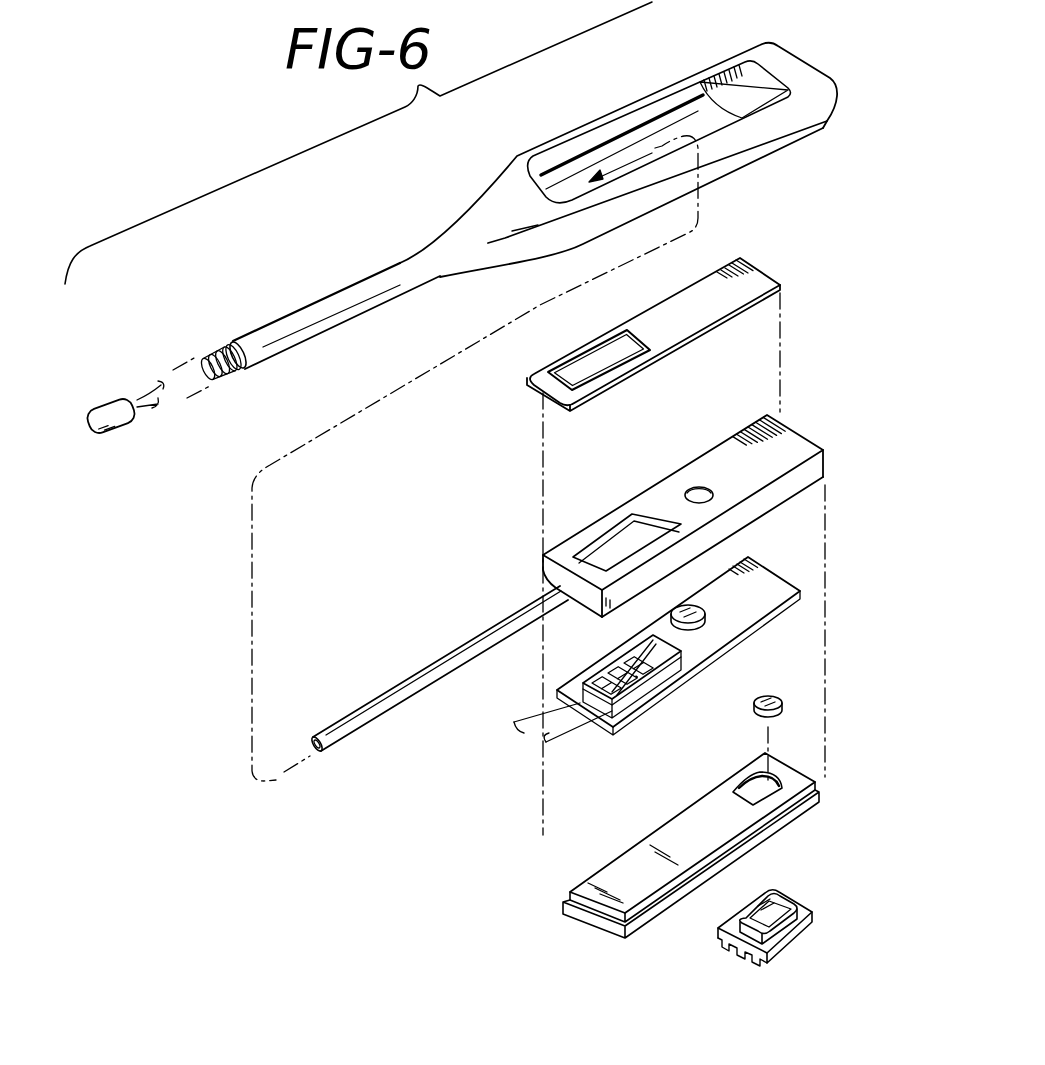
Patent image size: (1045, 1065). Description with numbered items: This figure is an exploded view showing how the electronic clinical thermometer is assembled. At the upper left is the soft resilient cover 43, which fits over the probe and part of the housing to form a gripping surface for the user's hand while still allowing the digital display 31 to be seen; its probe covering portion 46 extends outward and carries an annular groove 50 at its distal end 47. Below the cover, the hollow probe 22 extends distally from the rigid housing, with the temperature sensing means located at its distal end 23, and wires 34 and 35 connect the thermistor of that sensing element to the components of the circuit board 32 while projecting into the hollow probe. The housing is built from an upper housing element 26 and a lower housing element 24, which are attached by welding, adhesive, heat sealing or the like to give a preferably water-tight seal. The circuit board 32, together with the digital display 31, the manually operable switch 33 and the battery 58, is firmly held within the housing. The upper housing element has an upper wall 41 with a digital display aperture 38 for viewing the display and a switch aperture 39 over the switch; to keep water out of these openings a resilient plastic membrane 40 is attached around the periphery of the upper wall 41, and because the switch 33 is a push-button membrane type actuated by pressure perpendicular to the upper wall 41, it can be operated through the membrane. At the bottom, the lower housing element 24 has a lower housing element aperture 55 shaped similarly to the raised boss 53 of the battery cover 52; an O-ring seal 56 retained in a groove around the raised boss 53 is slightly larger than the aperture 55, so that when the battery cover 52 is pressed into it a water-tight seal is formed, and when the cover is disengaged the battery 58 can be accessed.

The hollow probe 22 is at (420, 687).
The distal end 23 is at (330, 742).
The lower housing element 24 is at (580, 926).
The upper housing element 26 is at (630, 596).
The digital display 31 is at (680, 653).
The circuit board 32 is at (740, 637).
The manually operable switch 33 is at (707, 613).
The wire 34 is at (135, 403).
The wire 35 is at (139, 409).
The digital display aperture 38 is at (645, 510).
The switch aperture 39 is at (693, 488).
The resilient plastic membrane 40 is at (752, 265).
The upper wall 41 is at (800, 440).
The soft resilient cover 43 is at (493, 182).
The probe covering portion 46 is at (383, 271).
The distal end 47 is at (255, 366).
The annular groove 50 is at (233, 341).
The battery cover 52 is at (812, 918).
The raised boss 53 is at (790, 893).
The lower housing element aperture 55 is at (534, 485).
The O-ring seal 56 is at (785, 931).
The battery 58 is at (753, 705).